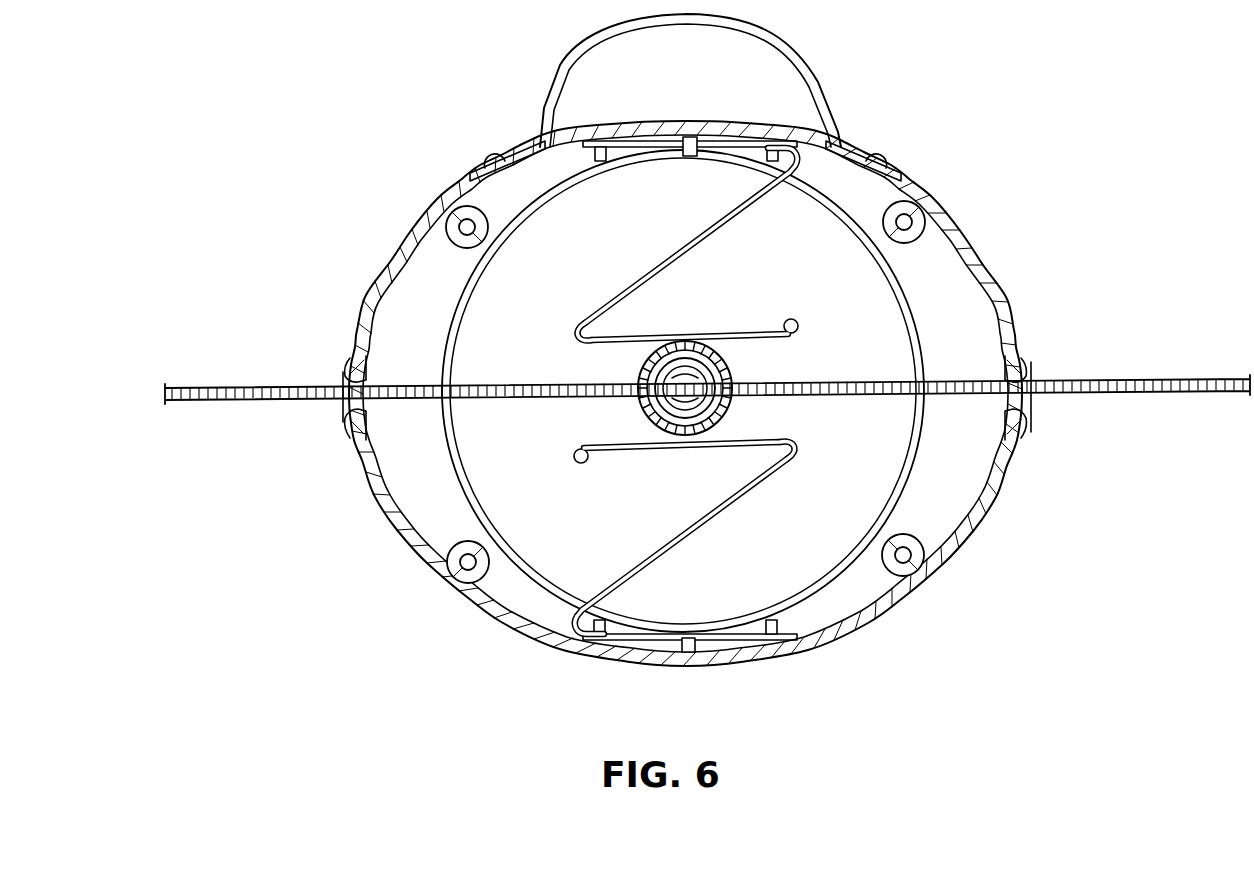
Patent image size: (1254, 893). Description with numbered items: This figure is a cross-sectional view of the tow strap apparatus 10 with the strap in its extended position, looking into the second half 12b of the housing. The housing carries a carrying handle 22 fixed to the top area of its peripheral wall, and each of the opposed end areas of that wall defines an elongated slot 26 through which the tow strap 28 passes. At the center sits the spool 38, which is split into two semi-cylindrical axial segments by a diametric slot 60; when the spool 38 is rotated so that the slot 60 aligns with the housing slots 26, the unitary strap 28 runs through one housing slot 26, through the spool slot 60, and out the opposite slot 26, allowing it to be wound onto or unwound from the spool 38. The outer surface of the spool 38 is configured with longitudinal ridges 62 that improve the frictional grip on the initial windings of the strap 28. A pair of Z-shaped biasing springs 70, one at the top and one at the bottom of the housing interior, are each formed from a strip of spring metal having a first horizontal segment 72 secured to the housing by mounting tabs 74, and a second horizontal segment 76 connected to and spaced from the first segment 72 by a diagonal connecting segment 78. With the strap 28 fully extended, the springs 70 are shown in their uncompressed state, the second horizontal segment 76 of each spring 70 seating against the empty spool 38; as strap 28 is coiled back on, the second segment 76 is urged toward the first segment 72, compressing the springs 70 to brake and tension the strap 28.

The tow strap apparatus 10 is at (1000, 234).
The second half 12b is at (1010, 490).
The carrying handle 22 is at (818, 72).
The slot 26 is at (340, 384).
The tow strap 28 is at (258, 404).
The spool 38 is at (733, 370).
The diametric slot 60 is at (733, 400).
The longitudinal ridges 62 is at (645, 343).
The Z-shaped biasing springs 70 is at (708, 391).
The first horizontal segment 72 is at (718, 634).
The mounting tabs 74 is at (690, 140).
The second horizontal segment 76 is at (676, 336).
The diagonal connecting segment 78 is at (712, 238).